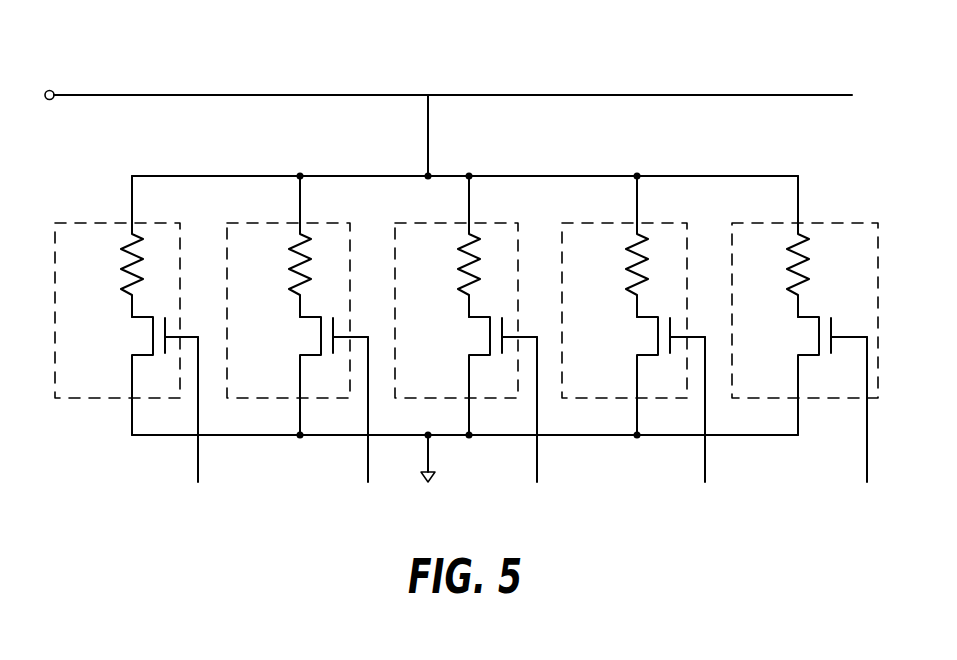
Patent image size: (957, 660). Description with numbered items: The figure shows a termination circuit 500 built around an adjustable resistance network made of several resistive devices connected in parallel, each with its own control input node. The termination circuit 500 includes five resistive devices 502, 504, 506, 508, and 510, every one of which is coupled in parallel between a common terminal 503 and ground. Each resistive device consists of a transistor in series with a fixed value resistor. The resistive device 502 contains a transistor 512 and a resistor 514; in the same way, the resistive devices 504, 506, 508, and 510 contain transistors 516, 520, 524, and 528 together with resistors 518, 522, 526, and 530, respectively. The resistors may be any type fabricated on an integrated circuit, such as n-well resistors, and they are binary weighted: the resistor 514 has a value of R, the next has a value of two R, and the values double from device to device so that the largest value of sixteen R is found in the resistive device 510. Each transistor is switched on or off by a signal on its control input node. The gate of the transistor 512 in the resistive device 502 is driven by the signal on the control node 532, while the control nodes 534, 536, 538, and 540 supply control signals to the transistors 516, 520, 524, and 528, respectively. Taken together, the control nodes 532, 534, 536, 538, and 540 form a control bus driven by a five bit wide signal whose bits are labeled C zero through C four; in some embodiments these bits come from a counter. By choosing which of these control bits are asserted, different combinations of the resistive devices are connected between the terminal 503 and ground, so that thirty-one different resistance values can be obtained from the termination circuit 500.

The termination circuit 500 is at (733, 52).
The terminal 503 is at (50, 90).
The resistive device 502 is at (90, 221).
The resistive device 504 is at (260, 221).
The resistive device 506 is at (430, 221).
The resistive device 508 is at (597, 221).
The resistive device 510 is at (767, 221).
The transistor 512 is at (141, 355).
The resistor 514 is at (122, 268).
The transistor 516 is at (309, 354).
The resistor 518 is at (290, 267).
The transistor 520 is at (478, 354).
The resistor 522 is at (459, 267).
The transistor 524 is at (647, 354).
The resistor 526 is at (627, 267).
The transistor 528 is at (808, 354).
The resistor 530 is at (788, 267).
The control node 532 is at (197, 466).
The control node 534 is at (366, 466).
The control node 536 is at (535, 466).
The control node 538 is at (704, 466).
The control node 540 is at (866, 466).